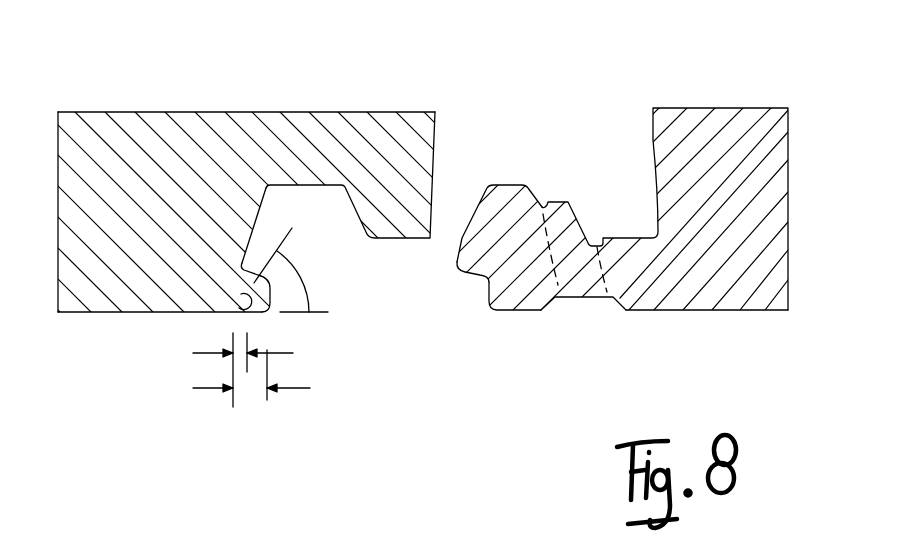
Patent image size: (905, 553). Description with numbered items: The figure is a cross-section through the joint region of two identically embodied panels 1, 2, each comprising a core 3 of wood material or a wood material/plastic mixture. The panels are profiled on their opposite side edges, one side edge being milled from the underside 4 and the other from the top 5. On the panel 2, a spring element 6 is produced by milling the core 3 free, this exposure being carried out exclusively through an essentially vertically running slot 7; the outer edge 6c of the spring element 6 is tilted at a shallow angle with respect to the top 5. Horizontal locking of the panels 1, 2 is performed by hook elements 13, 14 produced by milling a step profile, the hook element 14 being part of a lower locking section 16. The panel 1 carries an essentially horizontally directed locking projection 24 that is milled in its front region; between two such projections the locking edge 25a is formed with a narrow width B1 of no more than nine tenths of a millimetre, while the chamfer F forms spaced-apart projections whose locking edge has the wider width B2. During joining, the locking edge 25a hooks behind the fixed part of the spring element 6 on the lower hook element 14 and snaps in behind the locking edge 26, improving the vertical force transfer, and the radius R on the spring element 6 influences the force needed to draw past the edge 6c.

The panel 1 is at (137, 123).
The panel 2 is at (707, 127).
The core 3 is at (321, 215).
The underside 4 is at (117, 313).
The top 5 is at (258, 111).
The spring element 6 is at (503, 226).
The outer edge of the spring element 6c is at (470, 213).
The slot 7 is at (578, 305).
The hook element 13 is at (467, 135).
The hook element 14 is at (630, 107).
The lower locking section 16 is at (675, 296).
The locking projection 24 is at (270, 276).
The locking edge 25a is at (244, 268).
The locking edge 26 is at (477, 282).
The chamfer F is at (243, 312).
The radius R is at (452, 268).
The width of the locking edge B1 is at (247, 340).
The width of the locking edge B2 is at (252, 400).